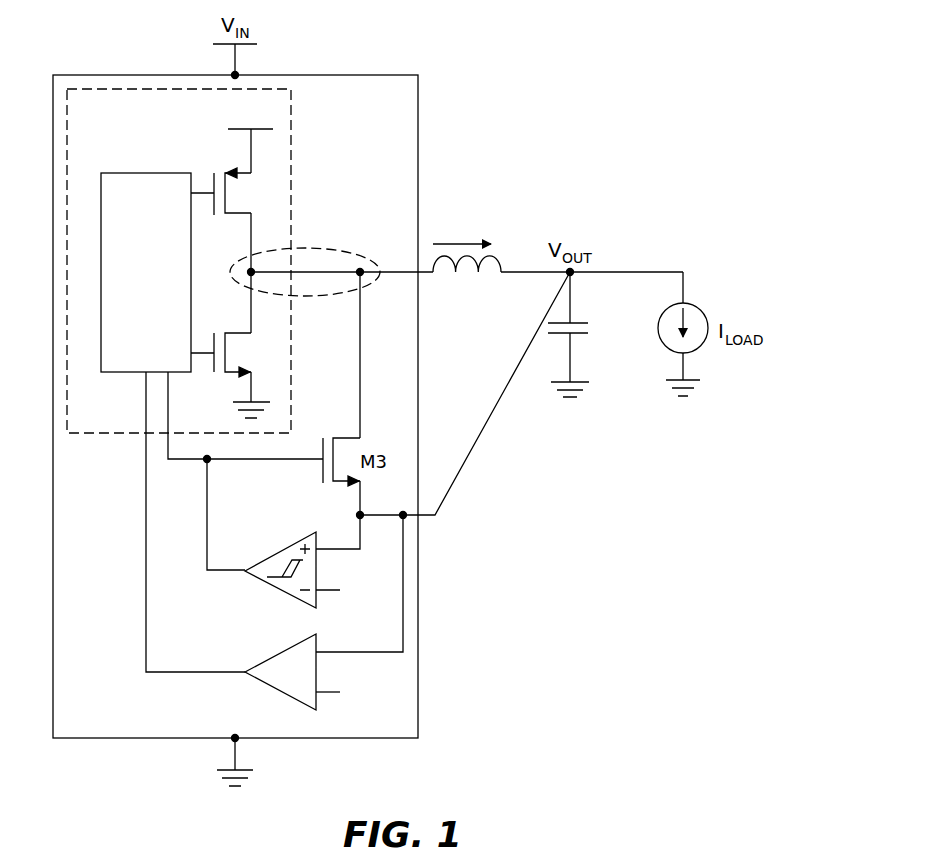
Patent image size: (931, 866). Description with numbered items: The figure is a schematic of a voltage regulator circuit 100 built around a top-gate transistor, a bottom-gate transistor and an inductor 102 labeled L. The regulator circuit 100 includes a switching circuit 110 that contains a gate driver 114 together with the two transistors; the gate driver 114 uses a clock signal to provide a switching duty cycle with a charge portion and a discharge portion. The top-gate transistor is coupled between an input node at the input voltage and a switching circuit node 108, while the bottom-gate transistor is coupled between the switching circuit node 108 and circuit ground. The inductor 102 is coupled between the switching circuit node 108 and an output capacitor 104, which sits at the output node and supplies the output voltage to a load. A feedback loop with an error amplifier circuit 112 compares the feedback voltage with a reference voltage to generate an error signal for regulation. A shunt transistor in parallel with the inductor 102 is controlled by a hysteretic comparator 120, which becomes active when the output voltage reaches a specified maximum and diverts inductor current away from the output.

The voltage regulator circuit 100 is at (624, 72).
The inductor 102 is at (484, 277).
The output capacitor 104 is at (580, 322).
The switching circuit node 108 is at (312, 250).
The switching circuit 110 is at (291, 162).
The error amplifier circuit 112 is at (283, 650).
The gate driver 114 is at (147, 172).
The hysteretic comparator 120 is at (280, 548).